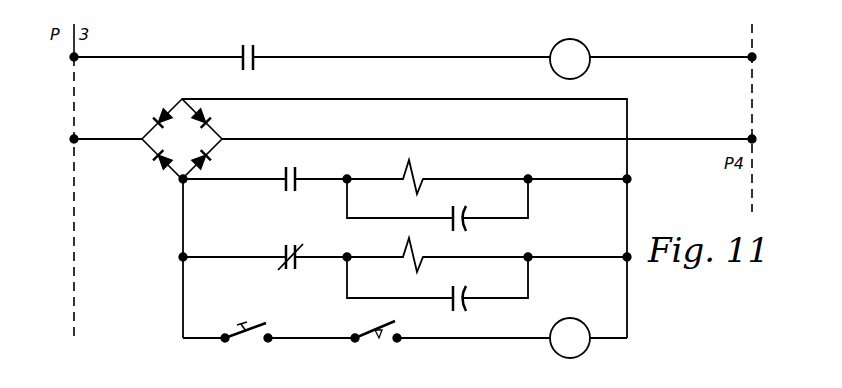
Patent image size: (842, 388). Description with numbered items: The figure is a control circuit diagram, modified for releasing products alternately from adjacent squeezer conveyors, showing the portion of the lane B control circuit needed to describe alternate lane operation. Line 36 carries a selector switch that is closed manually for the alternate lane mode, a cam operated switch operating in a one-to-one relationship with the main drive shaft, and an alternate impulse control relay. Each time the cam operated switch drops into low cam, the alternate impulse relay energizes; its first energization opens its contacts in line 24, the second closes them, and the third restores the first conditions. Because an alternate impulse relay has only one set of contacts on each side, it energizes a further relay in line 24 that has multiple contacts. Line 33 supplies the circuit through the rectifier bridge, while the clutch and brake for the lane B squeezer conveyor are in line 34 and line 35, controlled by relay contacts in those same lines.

The line 24 is at (395, 59).
The line 33 is at (25, 132).
The line 34 is at (25, 172).
The line 35 is at (23, 250).
The line 36 is at (25, 330).